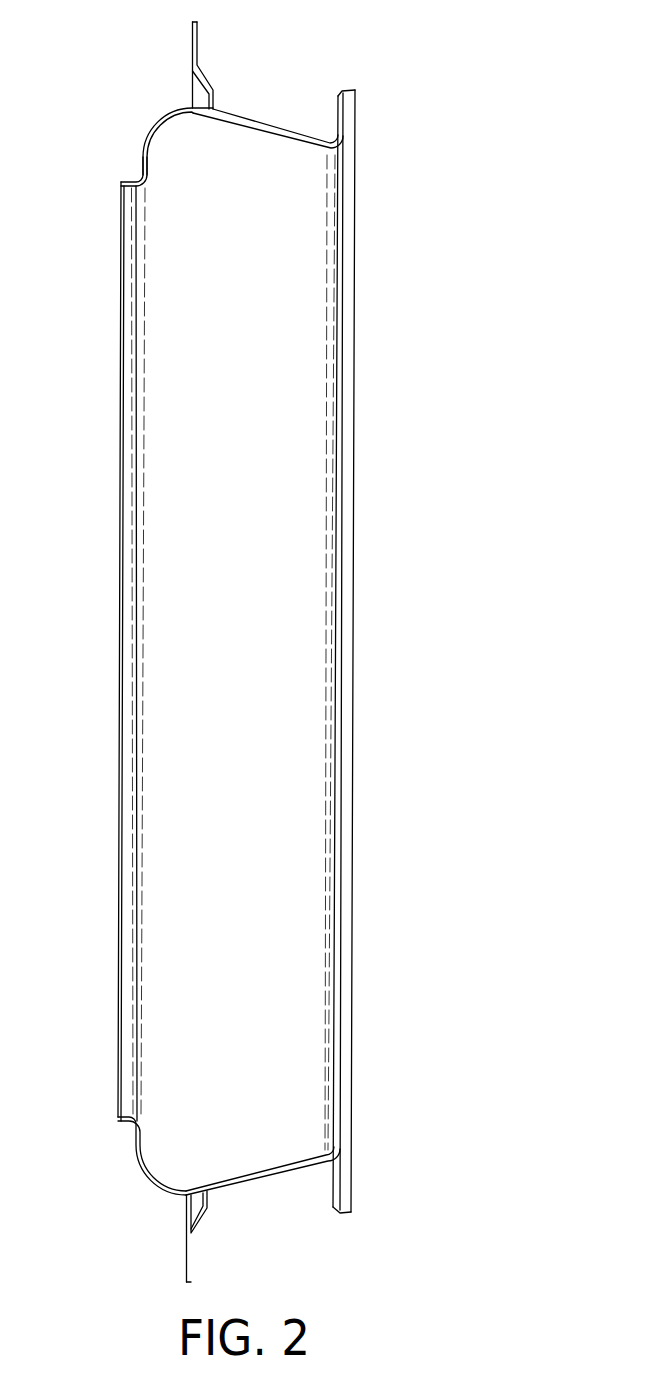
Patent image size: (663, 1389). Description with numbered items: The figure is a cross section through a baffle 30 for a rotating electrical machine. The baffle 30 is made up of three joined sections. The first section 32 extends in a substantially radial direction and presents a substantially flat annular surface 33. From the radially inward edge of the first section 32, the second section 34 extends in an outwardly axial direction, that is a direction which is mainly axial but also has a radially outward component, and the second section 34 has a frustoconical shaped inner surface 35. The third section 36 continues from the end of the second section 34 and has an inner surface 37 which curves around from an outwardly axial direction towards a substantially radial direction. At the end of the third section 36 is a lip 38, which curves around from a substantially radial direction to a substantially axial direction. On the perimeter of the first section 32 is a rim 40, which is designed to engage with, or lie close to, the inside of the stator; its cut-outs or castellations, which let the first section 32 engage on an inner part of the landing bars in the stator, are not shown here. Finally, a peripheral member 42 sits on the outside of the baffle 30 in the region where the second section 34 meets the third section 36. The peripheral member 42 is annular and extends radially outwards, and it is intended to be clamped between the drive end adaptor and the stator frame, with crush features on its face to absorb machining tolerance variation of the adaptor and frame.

The baffle 30 is at (297, 652).
The first section 32 is at (358, 629).
The substantially flat annular surface 33 is at (347, 118).
The second section 34 is at (264, 629).
The frustoconical shaped inner surface 35 is at (298, 144).
The third section 36 is at (142, 651).
The inner surface 37 is at (147, 162).
The lip 38 is at (121, 185).
The rim 40 is at (356, 90).
The peripheral member 42 is at (192, 57).